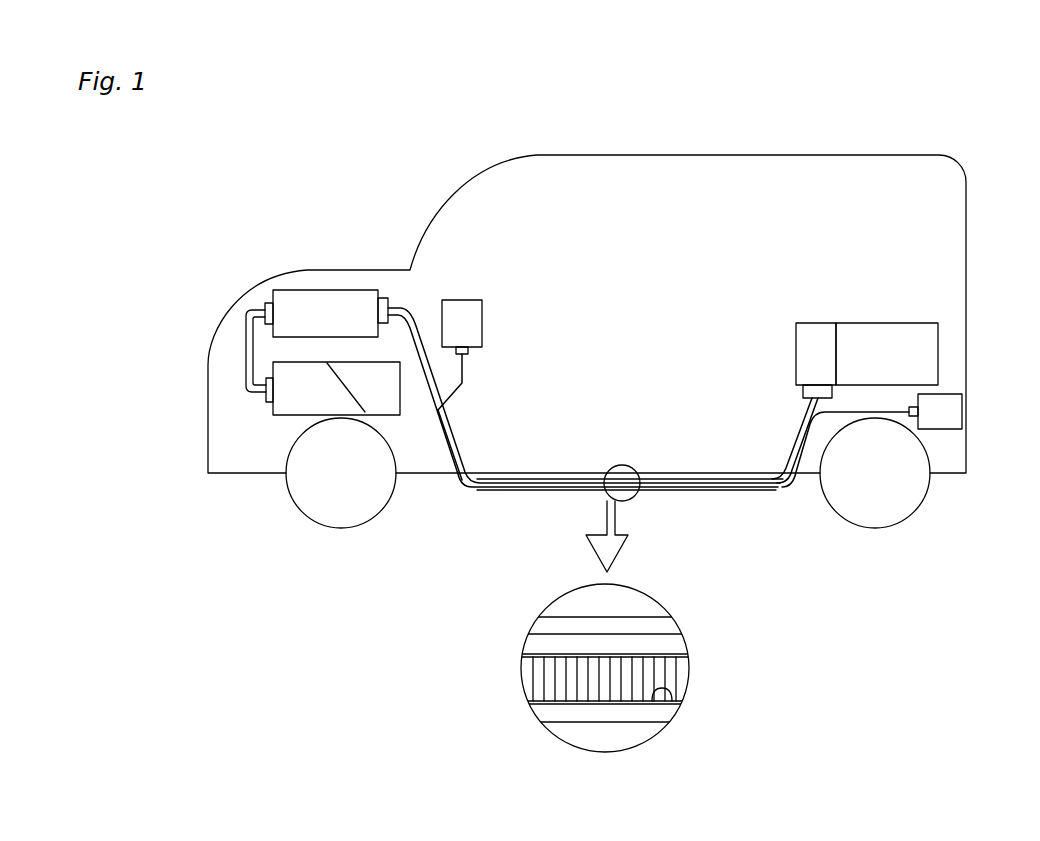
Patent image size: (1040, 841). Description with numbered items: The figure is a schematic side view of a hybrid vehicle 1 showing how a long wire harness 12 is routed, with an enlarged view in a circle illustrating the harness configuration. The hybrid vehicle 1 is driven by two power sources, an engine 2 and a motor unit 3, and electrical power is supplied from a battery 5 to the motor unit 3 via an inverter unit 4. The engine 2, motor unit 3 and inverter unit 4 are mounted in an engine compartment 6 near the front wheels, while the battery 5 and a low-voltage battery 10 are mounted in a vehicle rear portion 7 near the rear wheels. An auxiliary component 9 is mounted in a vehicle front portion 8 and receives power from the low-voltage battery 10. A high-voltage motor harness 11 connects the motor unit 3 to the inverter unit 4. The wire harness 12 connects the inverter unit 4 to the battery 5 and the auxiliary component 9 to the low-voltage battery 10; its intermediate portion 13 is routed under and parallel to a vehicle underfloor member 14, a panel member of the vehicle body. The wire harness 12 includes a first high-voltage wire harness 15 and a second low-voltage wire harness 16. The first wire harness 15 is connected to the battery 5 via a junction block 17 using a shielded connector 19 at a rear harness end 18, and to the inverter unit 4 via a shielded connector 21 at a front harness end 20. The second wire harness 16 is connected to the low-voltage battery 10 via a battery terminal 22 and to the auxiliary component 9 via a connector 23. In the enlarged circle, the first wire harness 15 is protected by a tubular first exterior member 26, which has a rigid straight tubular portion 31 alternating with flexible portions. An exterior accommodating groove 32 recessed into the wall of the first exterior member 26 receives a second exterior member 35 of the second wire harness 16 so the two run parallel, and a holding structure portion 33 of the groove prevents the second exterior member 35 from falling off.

The hybrid vehicle 1 is at (728, 132).
The engine 2 is at (390, 408).
The motor unit 3 is at (287, 408).
The inverter unit 4 is at (308, 303).
The battery 5 is at (890, 333).
The engine compartment 6 is at (217, 398).
The vehicle rear portion 7 is at (955, 457).
The vehicle front portion 8 is at (425, 263).
The auxiliary component 9 is at (468, 307).
The low-voltage battery 10 is at (952, 410).
The high-voltage motor harness 11 is at (250, 343).
The wire harness 12 is at (530, 492).
The intermediate portion 13 is at (690, 494).
The vehicle underfloor member 14 is at (738, 477).
The first high-voltage wire harness 15 is at (672, 646).
The second low-voltage wire harness 16 is at (679, 680).
The junction block 17 is at (818, 330).
The rear harness end 18 is at (808, 415).
The shielded connector 19 is at (803, 392).
The front harness end 20 is at (407, 312).
The shielded connector 21 is at (398, 312).
The battery terminal 22 is at (912, 427).
The connector 23 is at (472, 352).
The first exterior member 26 is at (540, 712).
The straight tubular portion 31 is at (625, 722).
The exterior accommodating groove 32 is at (533, 670).
The holding structure portion 33 is at (673, 700).
The second exterior member 35 is at (537, 688).